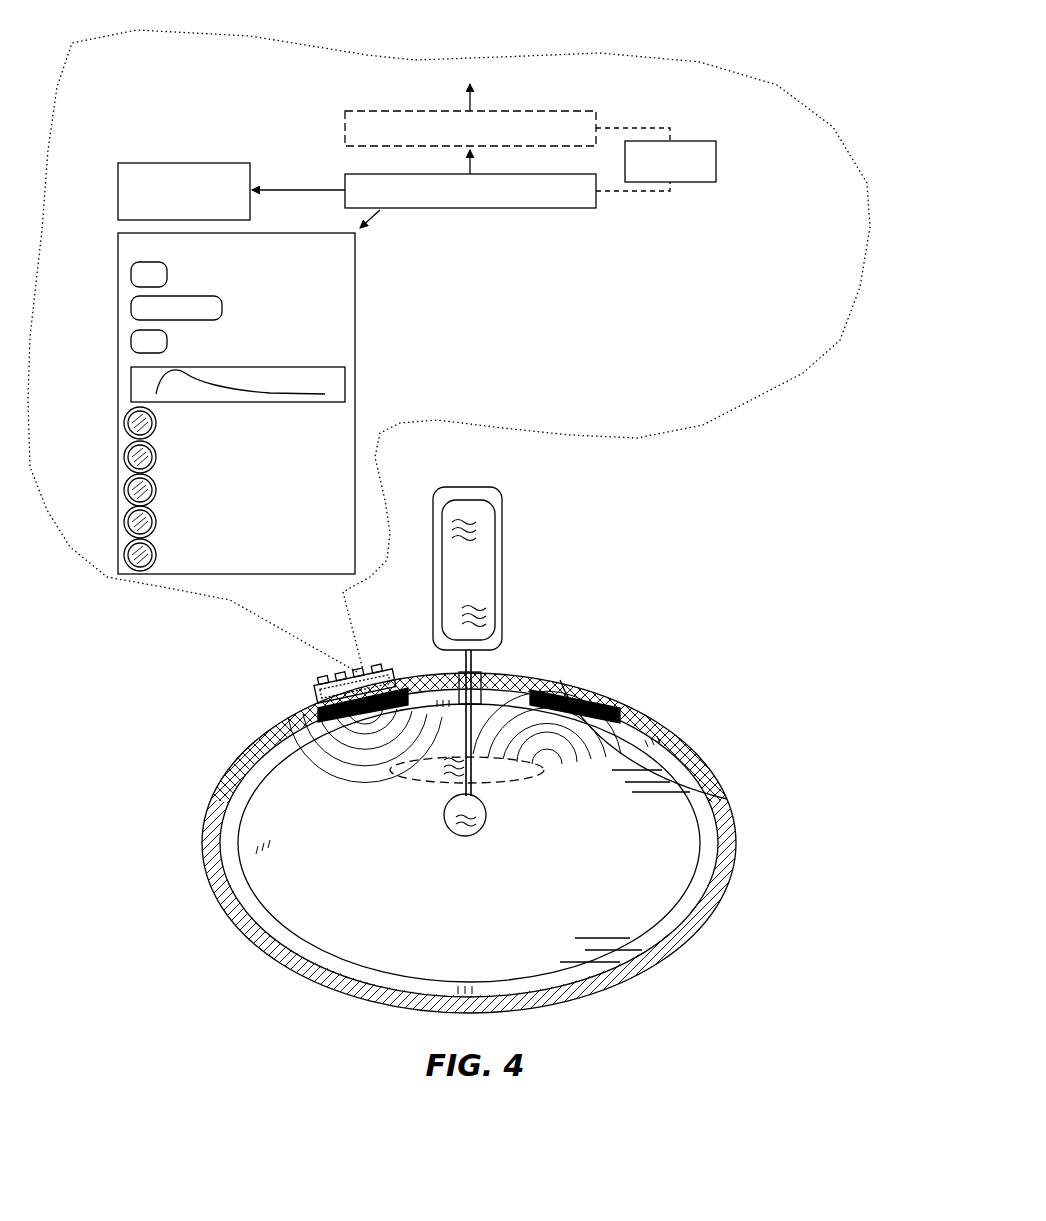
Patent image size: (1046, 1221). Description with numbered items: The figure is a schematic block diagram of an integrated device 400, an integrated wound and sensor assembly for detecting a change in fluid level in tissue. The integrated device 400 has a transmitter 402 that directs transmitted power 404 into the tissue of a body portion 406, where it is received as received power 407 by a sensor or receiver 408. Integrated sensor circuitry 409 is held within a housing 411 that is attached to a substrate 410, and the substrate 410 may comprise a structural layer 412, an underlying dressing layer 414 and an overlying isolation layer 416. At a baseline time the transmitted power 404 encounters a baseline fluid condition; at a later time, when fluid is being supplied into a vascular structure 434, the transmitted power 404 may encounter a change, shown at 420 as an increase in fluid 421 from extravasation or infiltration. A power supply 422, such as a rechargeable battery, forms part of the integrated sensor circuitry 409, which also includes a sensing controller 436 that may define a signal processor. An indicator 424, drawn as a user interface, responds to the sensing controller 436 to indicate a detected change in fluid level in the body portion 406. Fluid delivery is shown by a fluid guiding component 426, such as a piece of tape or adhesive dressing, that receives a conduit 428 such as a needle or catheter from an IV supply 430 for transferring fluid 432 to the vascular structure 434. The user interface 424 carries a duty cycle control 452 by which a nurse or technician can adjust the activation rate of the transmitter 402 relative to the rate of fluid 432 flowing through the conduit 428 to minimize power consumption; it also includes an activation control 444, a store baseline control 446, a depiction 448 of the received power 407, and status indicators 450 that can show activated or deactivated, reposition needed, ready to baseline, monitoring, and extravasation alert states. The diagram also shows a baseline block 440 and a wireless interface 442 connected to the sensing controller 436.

The integrated device 400 is at (430, 827).
The transmitter 402 is at (322, 716).
The transmitted power 404 is at (333, 762).
The body portion 406 is at (248, 836).
The received power 407 is at (582, 770).
The sensor or receiver 408 is at (635, 702).
The integrated sensor circuitry 409 is at (415, 58).
The substrate 410 is at (203, 853).
The housing 411 is at (325, 700).
The structural layer 412 is at (243, 772).
The underlying dressing layer 414 is at (243, 802).
The overlying isolation layer 416 is at (250, 742).
The change in fluid level 420 is at (402, 778).
The fluid 421 is at (428, 775).
The power supply 422 is at (716, 163).
The indicator / user interface 424 is at (118, 233).
The fluid guiding component 426 is at (484, 676).
The conduit 428 is at (462, 668).
The IV supply 430 is at (482, 553).
The fluid 432 is at (478, 556).
The vascular structure 434 is at (483, 826).
The sensing controller 436 is at (345, 178).
The baseline module 440 is at (220, 163).
The wireless interface 442 is at (345, 128).
The activation control 444 is at (131, 274).
The store baseline control 446 is at (131, 345).
The depiction 448 is at (131, 385).
The status indicators 450 is at (121, 468).
The duty cycle control 452 is at (131, 307).